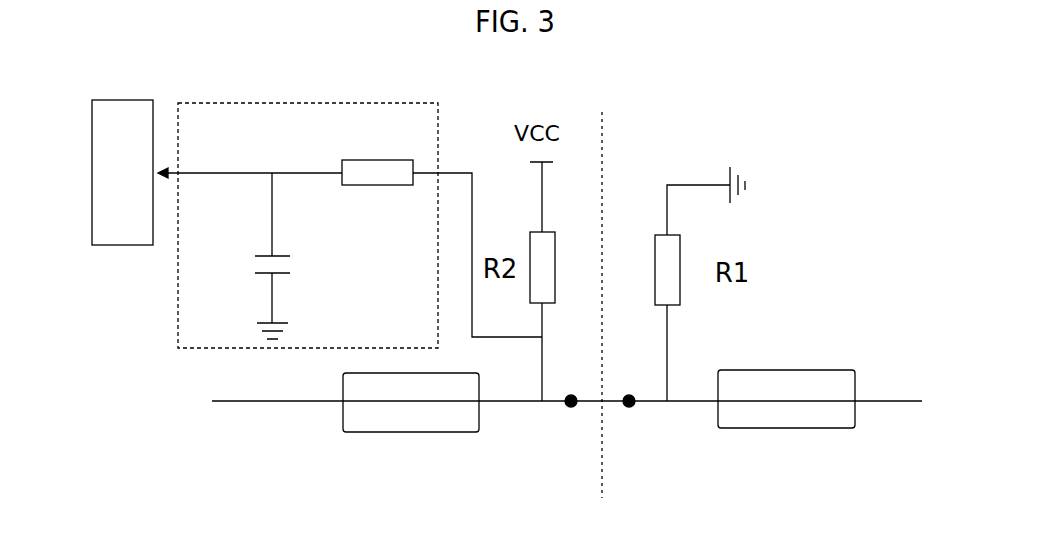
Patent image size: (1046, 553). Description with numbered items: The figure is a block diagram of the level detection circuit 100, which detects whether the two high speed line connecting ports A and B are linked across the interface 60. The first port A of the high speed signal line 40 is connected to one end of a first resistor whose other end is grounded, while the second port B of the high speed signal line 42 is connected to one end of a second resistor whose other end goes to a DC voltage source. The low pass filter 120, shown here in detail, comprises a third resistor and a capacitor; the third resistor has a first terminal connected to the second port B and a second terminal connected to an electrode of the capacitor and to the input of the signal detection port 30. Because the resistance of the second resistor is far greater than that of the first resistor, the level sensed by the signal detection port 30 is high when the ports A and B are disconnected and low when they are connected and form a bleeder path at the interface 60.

The level detection circuit 100 is at (692, 76).
The signal detection port 30 is at (120, 245).
The low pass filter 120 is at (313, 101).
The high speed signal line 42 is at (398, 432).
The high speed signal line 40 is at (800, 428).
The interface 60 is at (600, 495).
The first port A is at (635, 413).
The second port B is at (565, 412).